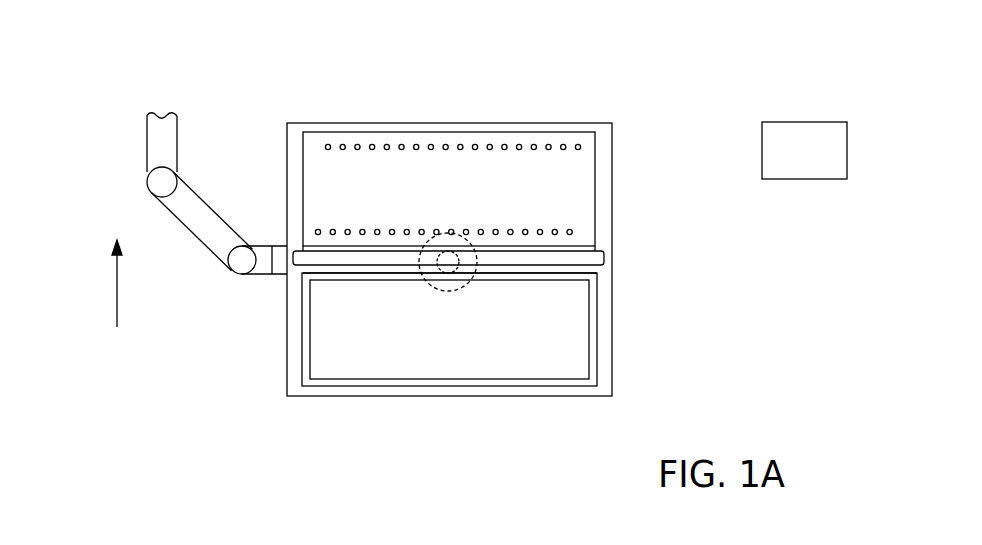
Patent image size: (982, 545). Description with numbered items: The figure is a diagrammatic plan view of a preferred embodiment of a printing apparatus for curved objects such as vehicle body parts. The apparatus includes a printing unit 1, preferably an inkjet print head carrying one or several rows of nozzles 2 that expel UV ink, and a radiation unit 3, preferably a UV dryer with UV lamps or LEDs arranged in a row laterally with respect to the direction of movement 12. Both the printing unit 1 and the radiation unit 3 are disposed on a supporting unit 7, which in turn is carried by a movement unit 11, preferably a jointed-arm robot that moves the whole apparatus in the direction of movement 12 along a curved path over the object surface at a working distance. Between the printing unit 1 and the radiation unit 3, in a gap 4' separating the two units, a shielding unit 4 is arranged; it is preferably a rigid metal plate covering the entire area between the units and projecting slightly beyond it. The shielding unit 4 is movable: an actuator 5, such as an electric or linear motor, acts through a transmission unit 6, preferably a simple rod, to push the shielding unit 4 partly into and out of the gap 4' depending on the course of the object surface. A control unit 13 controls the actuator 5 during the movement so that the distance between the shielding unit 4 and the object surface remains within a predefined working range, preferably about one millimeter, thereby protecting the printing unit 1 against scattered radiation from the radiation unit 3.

The printing unit 1 is at (463, 132).
The nozzles 2 is at (342, 150).
The radiation unit 3 is at (598, 327).
The shielding unit 4 is at (489, 255).
The gap 4' is at (516, 290).
The actuator 5 is at (457, 275).
The transmission unit 6 is at (440, 236).
The supporting unit 7 is at (605, 163).
The movement unit 11 is at (160, 150).
The direction of movement 12 is at (112, 292).
The control unit 13 is at (803, 142).